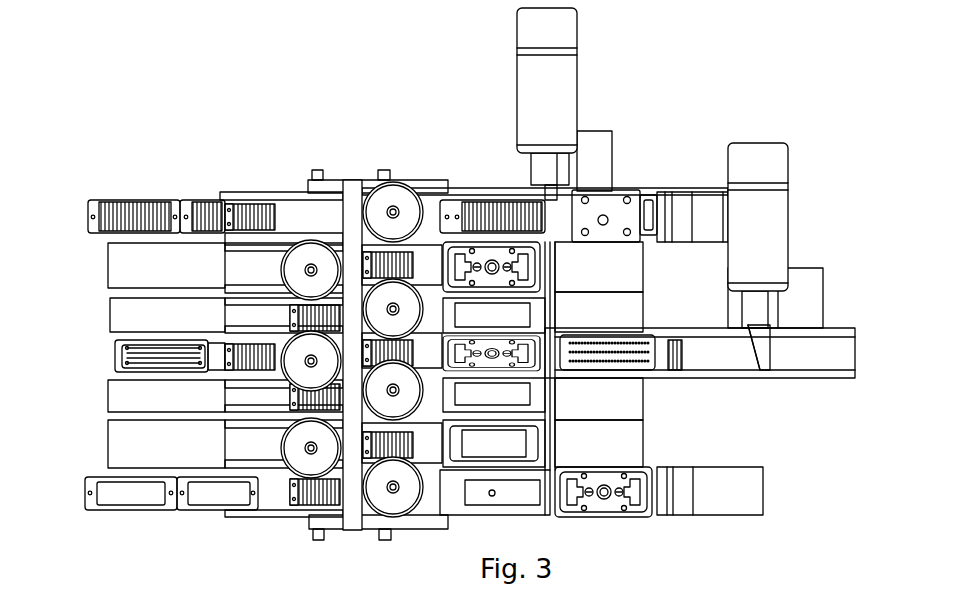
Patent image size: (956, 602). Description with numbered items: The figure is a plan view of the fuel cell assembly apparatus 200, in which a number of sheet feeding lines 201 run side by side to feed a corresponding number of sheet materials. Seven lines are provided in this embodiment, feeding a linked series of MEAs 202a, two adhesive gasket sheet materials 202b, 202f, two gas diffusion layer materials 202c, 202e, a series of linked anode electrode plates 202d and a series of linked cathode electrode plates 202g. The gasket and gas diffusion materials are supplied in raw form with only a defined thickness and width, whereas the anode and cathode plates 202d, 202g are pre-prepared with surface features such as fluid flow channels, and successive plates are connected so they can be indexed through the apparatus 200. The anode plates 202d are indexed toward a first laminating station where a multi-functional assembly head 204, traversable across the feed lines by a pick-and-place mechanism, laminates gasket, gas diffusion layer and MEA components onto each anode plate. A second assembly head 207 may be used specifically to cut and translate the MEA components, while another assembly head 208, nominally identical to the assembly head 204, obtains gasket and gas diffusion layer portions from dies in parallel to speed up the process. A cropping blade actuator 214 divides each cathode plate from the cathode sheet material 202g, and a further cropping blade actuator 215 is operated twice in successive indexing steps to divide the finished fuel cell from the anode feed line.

The apparatus 200 is at (190, 82).
The sheet feeding lines 201 is at (343, 180).
The linked series of MEAs 202a is at (113, 475).
The adhesive gasket sheet material 202b is at (137, 438).
The gas diffusion layer material 202c is at (127, 398).
The series of linked anode electrode plates 202d is at (125, 350).
The gas diffusion layer material 202e is at (127, 313).
The adhesive gasket sheet material 202f is at (147, 265).
The series of linked cathode electrode plates 202g is at (118, 202).
The multi-functional assembly head 204 is at (543, 380).
The second assembly head 207 is at (628, 472).
The second assembly head 208 is at (542, 250).
The cropping blade actuator 214 is at (517, 100).
The cropping blade actuator 215 is at (738, 160).